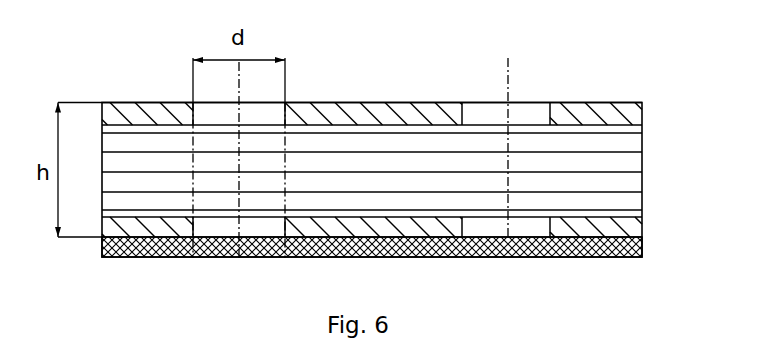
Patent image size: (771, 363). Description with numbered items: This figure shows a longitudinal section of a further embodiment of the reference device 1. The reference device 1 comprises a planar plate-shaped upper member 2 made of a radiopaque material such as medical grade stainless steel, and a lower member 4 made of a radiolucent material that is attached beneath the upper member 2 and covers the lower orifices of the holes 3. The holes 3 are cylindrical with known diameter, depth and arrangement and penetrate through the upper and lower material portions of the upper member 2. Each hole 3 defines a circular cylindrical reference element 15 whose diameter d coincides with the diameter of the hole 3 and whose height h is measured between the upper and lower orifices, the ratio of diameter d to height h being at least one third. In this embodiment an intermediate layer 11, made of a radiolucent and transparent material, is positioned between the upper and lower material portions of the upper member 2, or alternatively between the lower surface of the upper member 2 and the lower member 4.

The reference device 1 is at (453, 57).
The upper member 2 is at (642, 210).
The holes 3 is at (533, 93).
The lower member 4 is at (627, 257).
The intermediate layer 11 is at (593, 177).
The reference element 15 is at (208, 102).